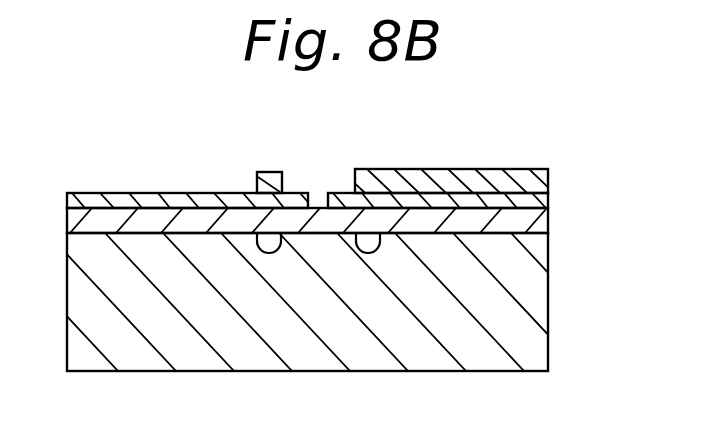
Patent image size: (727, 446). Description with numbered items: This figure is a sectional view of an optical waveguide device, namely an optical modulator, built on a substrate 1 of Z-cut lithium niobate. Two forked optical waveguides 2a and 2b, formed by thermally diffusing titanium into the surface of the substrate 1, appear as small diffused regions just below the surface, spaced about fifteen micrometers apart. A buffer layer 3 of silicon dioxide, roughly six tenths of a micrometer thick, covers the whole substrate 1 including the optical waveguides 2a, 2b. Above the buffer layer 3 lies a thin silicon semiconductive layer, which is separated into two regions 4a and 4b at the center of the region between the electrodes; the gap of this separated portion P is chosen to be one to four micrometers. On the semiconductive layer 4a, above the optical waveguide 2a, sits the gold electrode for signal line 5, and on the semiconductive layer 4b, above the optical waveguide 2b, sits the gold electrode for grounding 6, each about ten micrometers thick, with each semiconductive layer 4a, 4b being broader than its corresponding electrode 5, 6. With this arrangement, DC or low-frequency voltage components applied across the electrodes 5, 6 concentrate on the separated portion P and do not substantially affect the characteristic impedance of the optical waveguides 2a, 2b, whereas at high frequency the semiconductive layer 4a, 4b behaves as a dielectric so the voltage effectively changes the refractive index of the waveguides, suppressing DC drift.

The substrate 1 is at (543, 309).
The forked optical waveguide 2a is at (268, 246).
The forked optical waveguide 2b is at (367, 246).
The buffer layer 3 is at (548, 212).
The semiconductive layer 4a is at (113, 193).
The semiconductive layer 4b is at (548, 196).
The electrode for signal line 5 is at (262, 172).
The electrode for grounding 6 is at (437, 170).
The separated portion P is at (317, 182).